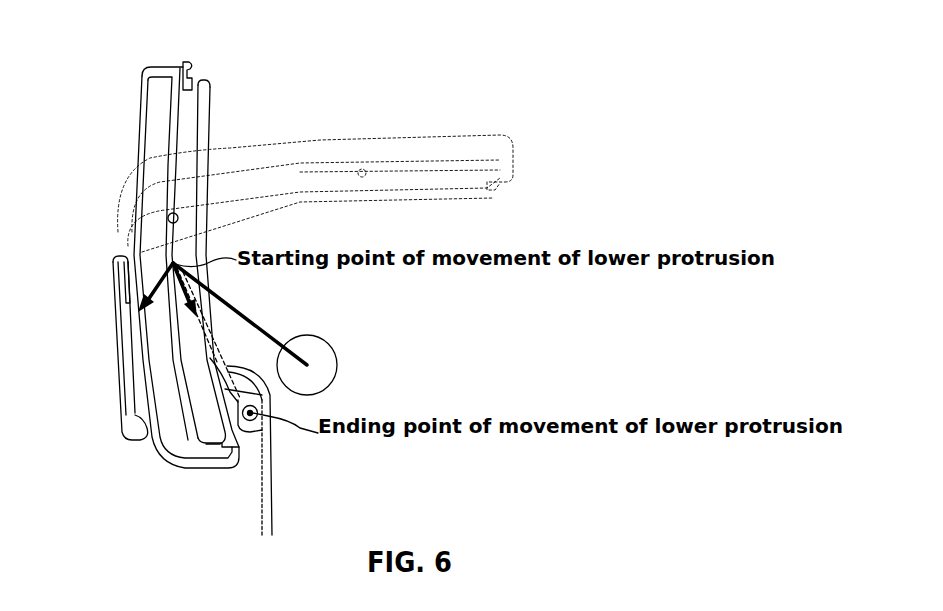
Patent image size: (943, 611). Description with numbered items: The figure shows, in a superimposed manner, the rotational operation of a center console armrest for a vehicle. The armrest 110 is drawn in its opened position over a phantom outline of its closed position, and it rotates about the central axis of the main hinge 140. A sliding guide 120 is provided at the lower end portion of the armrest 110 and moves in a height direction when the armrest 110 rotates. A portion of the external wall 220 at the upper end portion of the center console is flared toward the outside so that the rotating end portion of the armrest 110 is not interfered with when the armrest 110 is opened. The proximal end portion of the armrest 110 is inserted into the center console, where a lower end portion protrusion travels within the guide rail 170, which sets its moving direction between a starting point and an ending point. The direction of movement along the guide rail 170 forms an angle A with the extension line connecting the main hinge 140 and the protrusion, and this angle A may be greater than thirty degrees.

The armrest 110 is at (138, 132).
The sliding guide 120 is at (193, 85).
The main hinge 140 is at (337, 360).
The guide rail 170 is at (215, 363).
The external wall 220 is at (112, 312).
The angle A is at (212, 309).